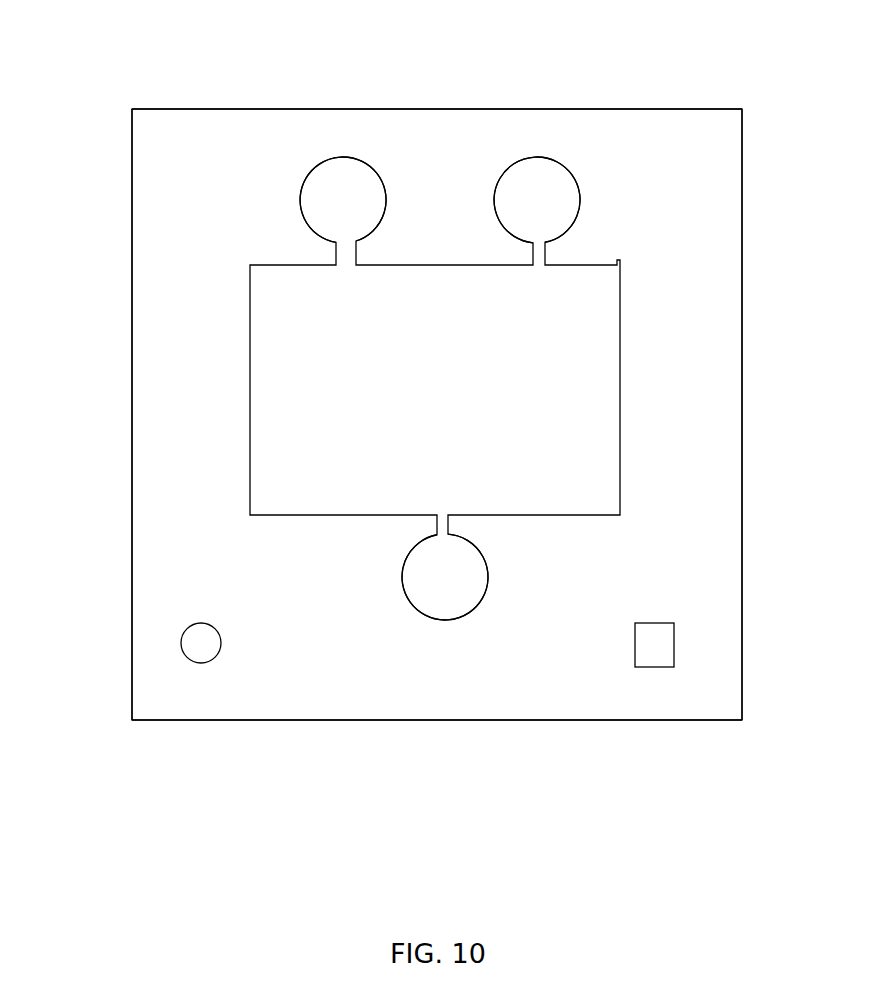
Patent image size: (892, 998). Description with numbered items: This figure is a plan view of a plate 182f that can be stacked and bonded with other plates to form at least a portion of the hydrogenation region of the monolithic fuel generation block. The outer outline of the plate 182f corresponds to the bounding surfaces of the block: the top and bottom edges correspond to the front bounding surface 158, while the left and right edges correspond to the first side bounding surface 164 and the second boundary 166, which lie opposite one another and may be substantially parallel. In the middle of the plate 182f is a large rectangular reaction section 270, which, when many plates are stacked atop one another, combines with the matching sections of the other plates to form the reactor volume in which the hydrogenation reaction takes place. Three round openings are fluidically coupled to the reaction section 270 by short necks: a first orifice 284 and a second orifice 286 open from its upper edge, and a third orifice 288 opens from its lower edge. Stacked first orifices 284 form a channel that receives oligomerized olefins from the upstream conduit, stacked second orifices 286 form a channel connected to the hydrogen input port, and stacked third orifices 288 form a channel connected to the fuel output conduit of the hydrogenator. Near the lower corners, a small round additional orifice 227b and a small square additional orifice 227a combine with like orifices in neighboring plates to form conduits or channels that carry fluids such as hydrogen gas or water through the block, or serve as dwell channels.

The front bounding surface 158 is at (382, 109).
The plate 182f is at (132, 200).
The first side bounding surface 164 is at (132, 382).
The second boundary 166 is at (742, 343).
The reaction section 270 is at (406, 384).
The first orifice 284 is at (367, 213).
The second orifice 286 is at (561, 213).
The third orifice 288 is at (469, 591).
The additional orifice 227a is at (637, 642).
The additional orifice 227b is at (207, 653).